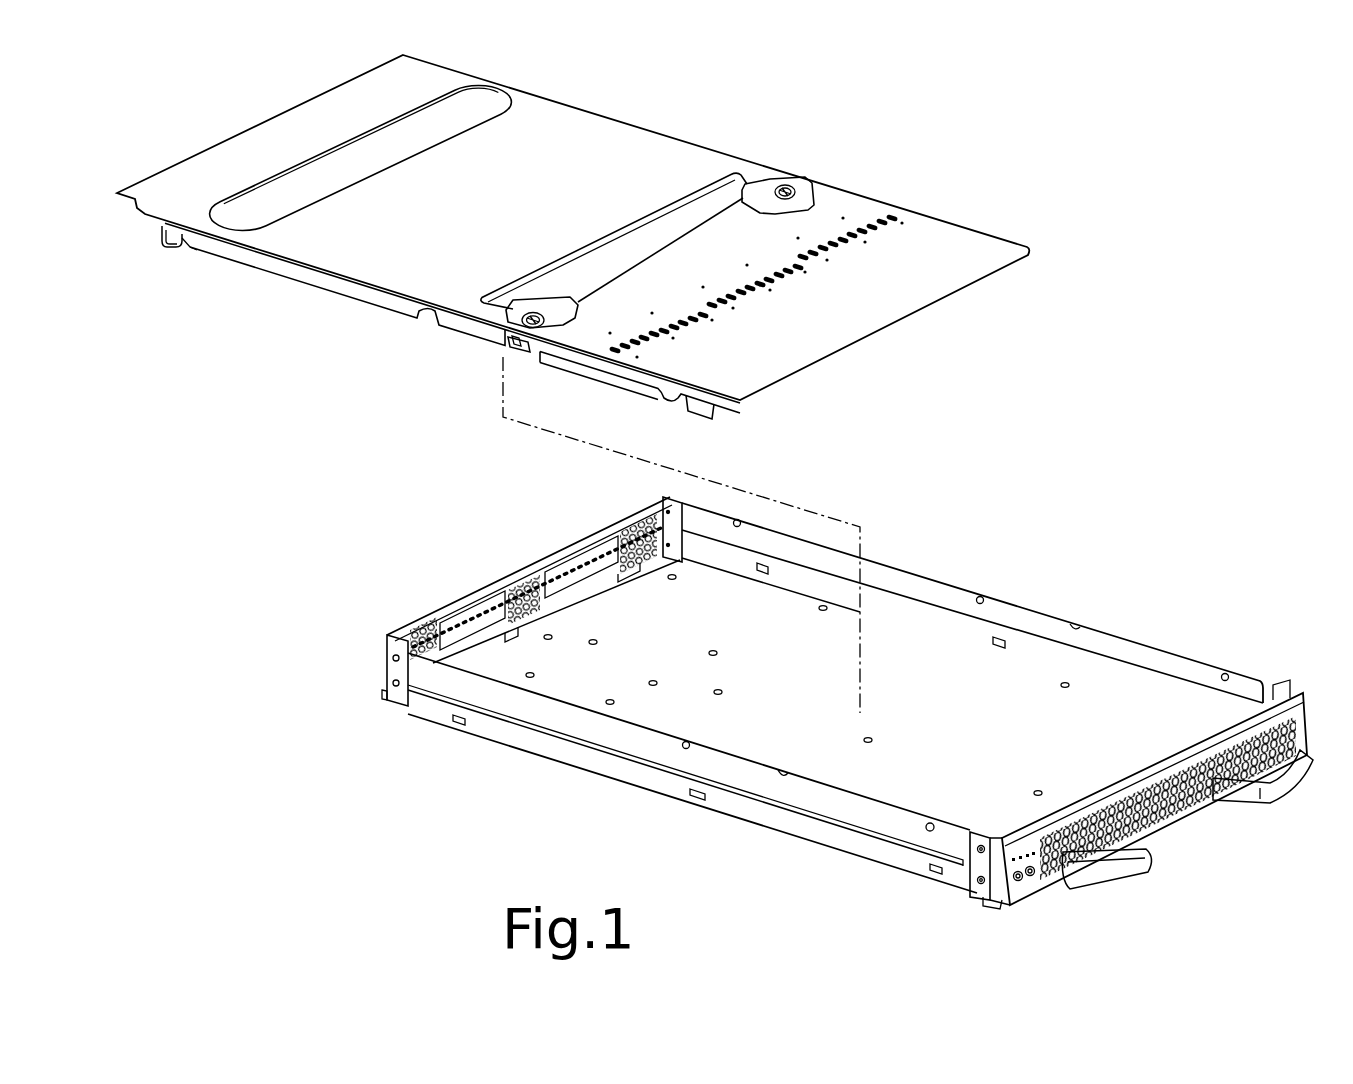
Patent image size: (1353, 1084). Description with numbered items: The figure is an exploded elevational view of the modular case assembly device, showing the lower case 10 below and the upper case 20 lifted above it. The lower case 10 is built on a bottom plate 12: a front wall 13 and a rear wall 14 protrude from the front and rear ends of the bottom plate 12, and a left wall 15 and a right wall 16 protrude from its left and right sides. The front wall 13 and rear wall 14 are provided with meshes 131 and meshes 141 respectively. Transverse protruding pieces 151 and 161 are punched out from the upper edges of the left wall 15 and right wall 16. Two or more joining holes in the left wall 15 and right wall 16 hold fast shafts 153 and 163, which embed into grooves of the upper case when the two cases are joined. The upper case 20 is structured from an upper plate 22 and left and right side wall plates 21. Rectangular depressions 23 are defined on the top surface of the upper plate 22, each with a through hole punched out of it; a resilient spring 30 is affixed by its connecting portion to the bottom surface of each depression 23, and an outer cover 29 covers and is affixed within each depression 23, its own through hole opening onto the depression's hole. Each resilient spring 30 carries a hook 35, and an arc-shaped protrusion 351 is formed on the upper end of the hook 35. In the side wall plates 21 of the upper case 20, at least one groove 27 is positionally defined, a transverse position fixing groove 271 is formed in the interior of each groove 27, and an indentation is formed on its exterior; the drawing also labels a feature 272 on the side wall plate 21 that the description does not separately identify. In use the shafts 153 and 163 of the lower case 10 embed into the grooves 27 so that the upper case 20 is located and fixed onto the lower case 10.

The lower case 10 is at (940, 573).
The bottom plate 12 is at (1098, 703).
The front wall 13 is at (1167, 822).
The meshes 131 is at (1147, 826).
The rear wall 14 is at (518, 575).
The meshes 141 is at (553, 565).
The left wall 15 is at (820, 800).
The transverse protruding piece 151 is at (785, 773).
The shaft 153 is at (683, 748).
The right wall 16 is at (1036, 612).
The transverse protruding piece 161 is at (1079, 625).
The shaft 163 is at (984, 598).
The upper case 20 is at (948, 182).
The side wall plate 21 is at (300, 280).
The upper plate 22 is at (637, 143).
The rectangular depression 23 is at (812, 186).
The groove 27 is at (190, 252).
The transverse position fixing groove 271 is at (172, 244).
The flange portion 272 is at (192, 260).
The outer cover 29 is at (757, 199).
The resilient spring 30 is at (793, 190).
The hook 35 is at (517, 345).
The arc-shaped protrusion 351 is at (516, 341).